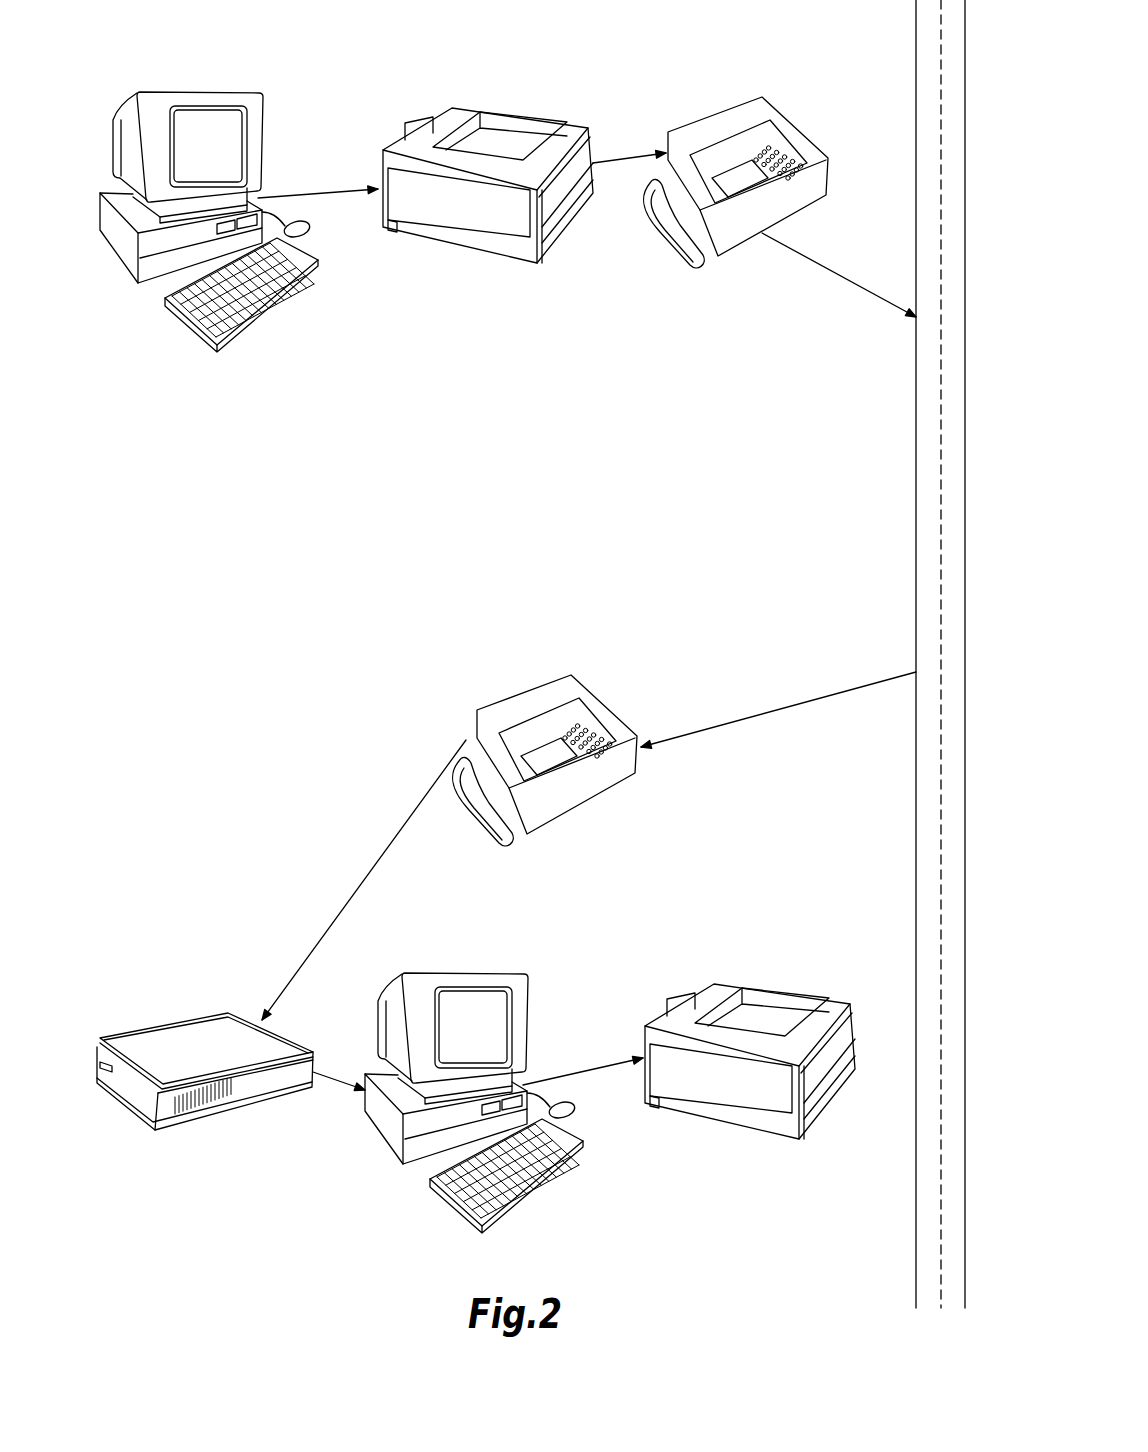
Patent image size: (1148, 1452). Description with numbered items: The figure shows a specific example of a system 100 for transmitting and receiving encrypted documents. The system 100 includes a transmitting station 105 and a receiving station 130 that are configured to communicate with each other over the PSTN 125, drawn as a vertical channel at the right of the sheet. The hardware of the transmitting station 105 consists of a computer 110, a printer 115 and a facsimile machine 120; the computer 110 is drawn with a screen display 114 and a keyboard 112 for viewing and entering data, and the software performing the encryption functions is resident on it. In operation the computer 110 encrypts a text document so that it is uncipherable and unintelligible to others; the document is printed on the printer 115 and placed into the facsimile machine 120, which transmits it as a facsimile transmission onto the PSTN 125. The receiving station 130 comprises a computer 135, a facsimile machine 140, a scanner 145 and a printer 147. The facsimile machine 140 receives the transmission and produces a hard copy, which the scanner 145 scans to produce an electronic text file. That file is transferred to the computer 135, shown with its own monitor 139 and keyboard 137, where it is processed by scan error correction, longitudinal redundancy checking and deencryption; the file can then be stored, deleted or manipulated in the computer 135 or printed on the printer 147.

The system 100 is at (529, 654).
The transmitting station 105 is at (487, 248).
The computer 110 is at (112, 243).
The keyboard 112 is at (278, 303).
The screen display 114 is at (195, 92).
The printer 115 is at (522, 112).
The facsimile machine 120 is at (784, 112).
The PSTN 125 is at (916, 424).
The receiving station 130 is at (481, 926).
The computer 135 is at (379, 1140).
The keyboard 137 is at (515, 1205).
The monitor 139 is at (527, 1033).
The facsimile machine 140 is at (588, 697).
The scanner 145 is at (190, 1018).
The printer 147 is at (773, 985).